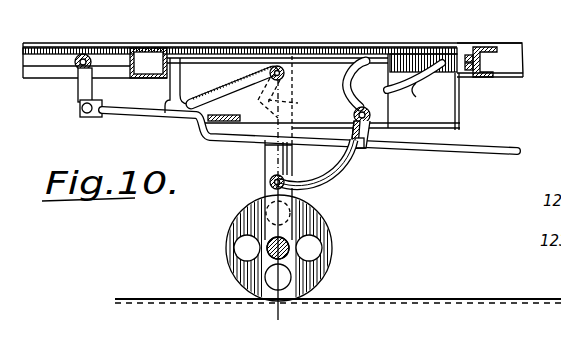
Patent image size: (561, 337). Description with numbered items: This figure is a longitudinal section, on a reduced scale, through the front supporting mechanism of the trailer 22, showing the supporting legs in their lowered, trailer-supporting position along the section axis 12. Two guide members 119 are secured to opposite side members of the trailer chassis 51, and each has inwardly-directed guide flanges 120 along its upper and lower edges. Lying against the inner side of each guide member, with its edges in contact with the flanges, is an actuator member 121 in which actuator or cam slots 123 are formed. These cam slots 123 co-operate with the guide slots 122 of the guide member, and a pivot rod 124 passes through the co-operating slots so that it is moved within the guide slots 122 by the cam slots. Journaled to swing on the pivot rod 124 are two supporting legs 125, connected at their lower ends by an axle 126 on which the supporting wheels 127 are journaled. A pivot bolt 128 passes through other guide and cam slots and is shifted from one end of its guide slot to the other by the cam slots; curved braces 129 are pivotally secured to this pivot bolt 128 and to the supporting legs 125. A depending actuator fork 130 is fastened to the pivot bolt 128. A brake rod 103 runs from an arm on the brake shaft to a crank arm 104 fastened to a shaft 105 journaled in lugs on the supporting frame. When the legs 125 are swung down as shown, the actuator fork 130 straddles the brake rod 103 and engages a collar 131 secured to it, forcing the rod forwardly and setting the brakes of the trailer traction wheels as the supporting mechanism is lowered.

The shaft 12 is at (278, 66).
The trailer 22 is at (367, 45).
The chassis of the semi-trailer 51 is at (513, 67).
The brake rod 103 is at (471, 151).
The crank arm 104 is at (83, 88).
The shaft 105 is at (82, 54).
The guide member 119 is at (423, 112).
The guide flange 120 is at (425, 55).
The actuator member 121 is at (313, 70).
The guide slot 122 is at (294, 102).
The actuator slot 123 is at (222, 88).
The pivot rod 124 is at (273, 68).
The supporting leg 125 is at (264, 167).
The axle 126 is at (270, 242).
The supporting wheel 127 is at (332, 233).
The pivot bolt 128 is at (370, 113).
The curved brace 129 is at (318, 188).
The actuator fork 130 is at (368, 138).
The collar 131 is at (352, 148).